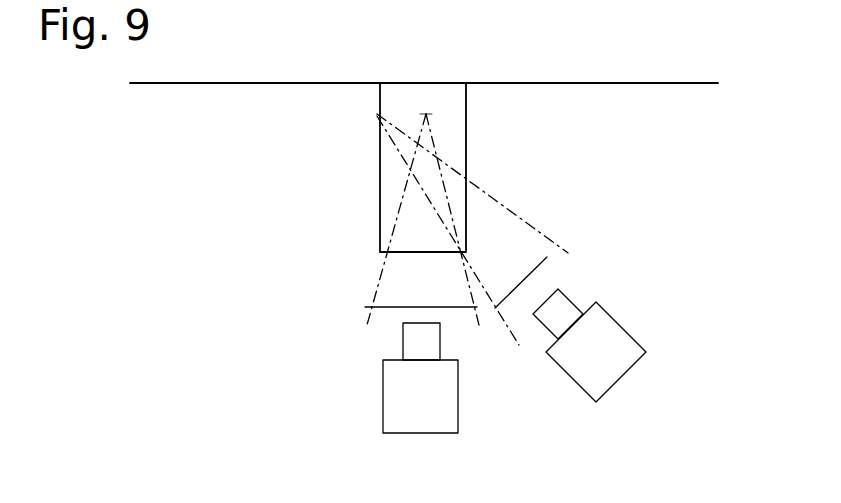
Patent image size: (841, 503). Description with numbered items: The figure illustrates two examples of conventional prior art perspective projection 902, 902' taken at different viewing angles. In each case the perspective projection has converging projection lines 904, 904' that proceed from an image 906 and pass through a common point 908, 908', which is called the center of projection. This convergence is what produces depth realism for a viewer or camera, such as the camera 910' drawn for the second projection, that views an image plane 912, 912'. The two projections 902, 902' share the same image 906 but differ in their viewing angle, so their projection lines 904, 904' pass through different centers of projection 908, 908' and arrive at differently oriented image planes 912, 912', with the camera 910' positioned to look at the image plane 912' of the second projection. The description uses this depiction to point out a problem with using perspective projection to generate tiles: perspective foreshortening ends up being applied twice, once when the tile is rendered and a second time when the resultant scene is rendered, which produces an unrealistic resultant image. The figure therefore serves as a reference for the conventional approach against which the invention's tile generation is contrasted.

The perspective projection 902 is at (355, 384).
The perspective projection 902' is at (661, 195).
The projection lines 904 is at (358, 219).
The projection lines 904' is at (478, 183).
The image 906 is at (461, 107).
The common point 908 is at (435, 76).
The common point 908' is at (427, 189).
The camera 910' is at (589, 372).
The image plane 912 is at (438, 247).
The image plane 912' is at (573, 281).